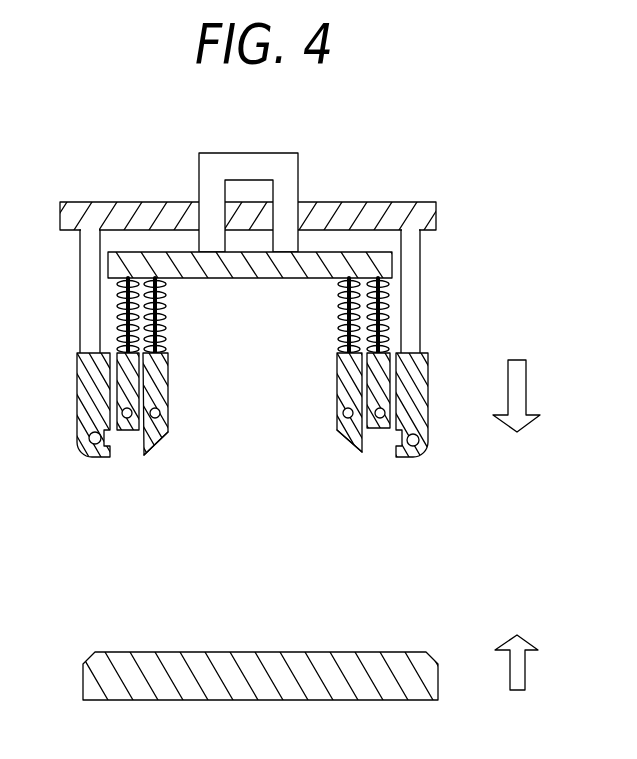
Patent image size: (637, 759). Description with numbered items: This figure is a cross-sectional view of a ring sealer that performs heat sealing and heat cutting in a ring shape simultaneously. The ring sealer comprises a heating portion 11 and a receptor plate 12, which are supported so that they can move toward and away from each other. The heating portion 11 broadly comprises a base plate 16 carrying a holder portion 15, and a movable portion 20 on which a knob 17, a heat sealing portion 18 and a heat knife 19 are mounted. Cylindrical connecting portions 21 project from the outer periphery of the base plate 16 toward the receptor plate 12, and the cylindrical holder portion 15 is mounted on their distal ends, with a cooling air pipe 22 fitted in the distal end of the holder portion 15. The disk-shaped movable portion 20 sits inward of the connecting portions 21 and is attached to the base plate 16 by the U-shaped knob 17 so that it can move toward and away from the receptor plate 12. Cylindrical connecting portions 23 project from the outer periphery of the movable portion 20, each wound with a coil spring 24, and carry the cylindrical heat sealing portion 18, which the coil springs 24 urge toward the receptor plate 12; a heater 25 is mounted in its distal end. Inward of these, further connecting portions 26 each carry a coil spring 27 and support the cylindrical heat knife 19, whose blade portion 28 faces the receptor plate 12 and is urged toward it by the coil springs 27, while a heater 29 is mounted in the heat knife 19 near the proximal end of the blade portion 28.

The heating portion 11 is at (367, 190).
The receptor plate 12 is at (425, 675).
The holder portion 15 is at (96, 375).
The base plate 16 is at (430, 202).
The knob 17 is at (285, 160).
The heat sealing portion 18 is at (128, 432).
The heat knife 19 is at (155, 380).
The movable portion 20 is at (258, 268).
The connecting portions 21 is at (82, 250).
The cooling air pipe 22 is at (88, 450).
The connecting portions 23 is at (118, 306).
The coil spring 24 is at (128, 288).
The heater 25 is at (133, 432).
The connecting portions 26 is at (162, 306).
The coil spring 27 is at (160, 330).
The blade portion 28 is at (150, 450).
The heater 29 is at (160, 413).